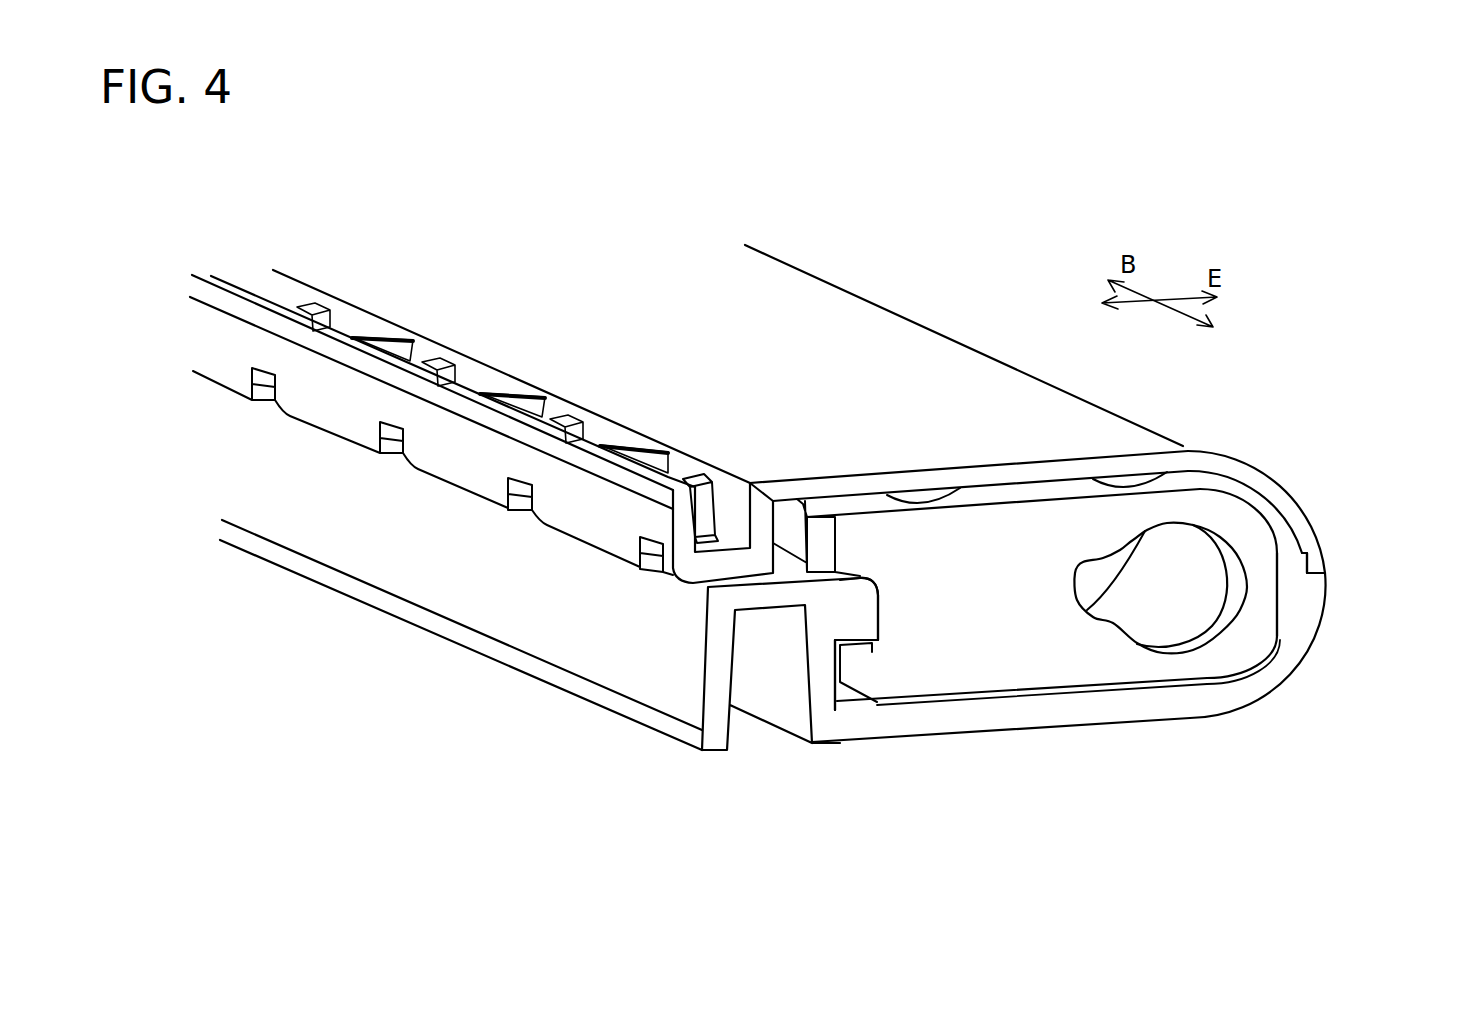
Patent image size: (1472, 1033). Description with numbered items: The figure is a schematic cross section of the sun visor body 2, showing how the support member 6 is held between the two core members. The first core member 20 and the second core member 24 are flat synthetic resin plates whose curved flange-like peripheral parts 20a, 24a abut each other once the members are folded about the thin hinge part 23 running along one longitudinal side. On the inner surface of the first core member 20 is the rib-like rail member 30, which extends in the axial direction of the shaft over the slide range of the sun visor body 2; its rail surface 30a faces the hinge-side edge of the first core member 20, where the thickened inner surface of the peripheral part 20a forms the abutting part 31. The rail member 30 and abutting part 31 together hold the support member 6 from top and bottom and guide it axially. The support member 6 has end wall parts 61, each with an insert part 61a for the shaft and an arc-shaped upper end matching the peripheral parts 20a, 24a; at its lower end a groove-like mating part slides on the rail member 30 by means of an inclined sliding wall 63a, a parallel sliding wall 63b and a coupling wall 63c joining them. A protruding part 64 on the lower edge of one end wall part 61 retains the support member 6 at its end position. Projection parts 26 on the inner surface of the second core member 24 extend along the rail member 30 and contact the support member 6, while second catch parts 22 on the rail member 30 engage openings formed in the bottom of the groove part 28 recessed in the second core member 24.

The sun visor body 2 is at (1012, 252).
The first core member 20 is at (1152, 722).
The peripheral part of first core member 20a is at (1327, 620).
The second catch parts 22 is at (433, 362).
The hinge part 23 is at (1326, 573).
The second core member 24 is at (807, 312).
The peripheral part of second core member 24a is at (1312, 520).
The projection parts 26 is at (927, 496).
The groove part 28 is at (723, 543).
The rail member 30 is at (877, 627).
The rail surface 30a is at (882, 610).
The abutting part 31 is at (1282, 638).
The support member 6 is at (1098, 661).
The end wall parts 61 is at (1031, 625).
The insert part 61a is at (1230, 613).
The sliding wall 63a is at (867, 568).
The sliding wall 63b is at (856, 642).
The coupling wall 63c is at (880, 597).
The protruding part 64 is at (807, 517).